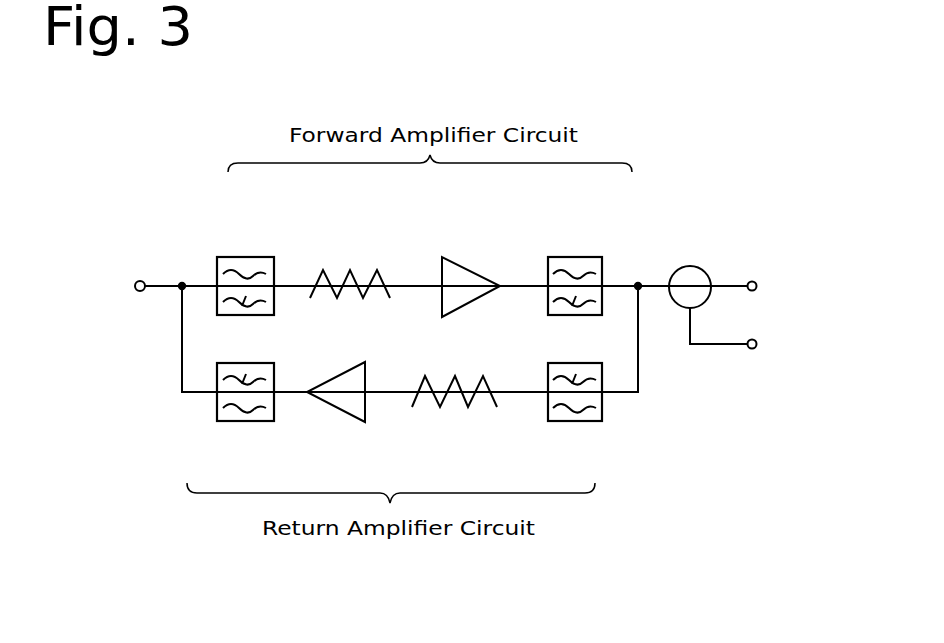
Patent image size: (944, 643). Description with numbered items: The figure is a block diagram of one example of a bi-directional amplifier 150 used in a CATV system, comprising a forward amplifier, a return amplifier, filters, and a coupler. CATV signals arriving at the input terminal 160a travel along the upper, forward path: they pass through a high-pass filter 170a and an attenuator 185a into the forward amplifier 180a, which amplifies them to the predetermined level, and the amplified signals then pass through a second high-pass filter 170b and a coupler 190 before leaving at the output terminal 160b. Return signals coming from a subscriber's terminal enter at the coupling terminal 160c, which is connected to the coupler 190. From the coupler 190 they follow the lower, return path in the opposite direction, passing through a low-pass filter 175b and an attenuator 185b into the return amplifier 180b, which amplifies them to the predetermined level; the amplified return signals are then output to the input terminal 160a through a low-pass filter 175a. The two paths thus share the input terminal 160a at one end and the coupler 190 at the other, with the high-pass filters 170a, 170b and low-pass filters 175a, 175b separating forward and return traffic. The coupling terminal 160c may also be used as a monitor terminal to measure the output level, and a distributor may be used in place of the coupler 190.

The bi-directional amplifier 150 is at (705, 122).
The input terminal 160a is at (141, 281).
The output terminal 160b is at (757, 287).
The coupling terminal 160c is at (757, 344).
The high-pass filter 170a is at (241, 257).
The high-pass filter 170b is at (582, 257).
The low-pass filter 175a is at (250, 421).
The low-pass filter 175b is at (575, 421).
The forward amplifier 180a is at (460, 264).
The return amplifier 180b is at (363, 421).
The attenuator 185a is at (345, 268).
The attenuator 185b is at (466, 410).
The coupler 190 is at (690, 265).